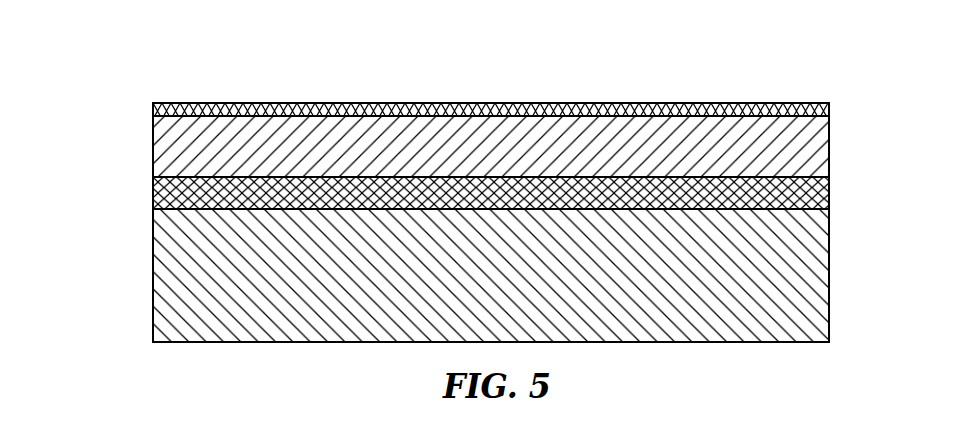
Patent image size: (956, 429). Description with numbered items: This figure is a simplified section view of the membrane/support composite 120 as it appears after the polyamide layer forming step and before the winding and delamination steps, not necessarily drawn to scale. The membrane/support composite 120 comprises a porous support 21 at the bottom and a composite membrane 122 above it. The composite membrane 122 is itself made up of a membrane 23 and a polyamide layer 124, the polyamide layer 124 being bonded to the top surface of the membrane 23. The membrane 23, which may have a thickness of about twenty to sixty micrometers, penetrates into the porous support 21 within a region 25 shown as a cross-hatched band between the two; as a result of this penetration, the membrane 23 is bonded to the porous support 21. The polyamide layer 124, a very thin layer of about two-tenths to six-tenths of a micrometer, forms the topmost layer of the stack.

The membrane/support composite 120 is at (332, 76).
The composite membrane 122 is at (98, 104).
The polyamide layer 124 is at (836, 103).
The membrane 23 is at (148, 117).
The region 25 is at (835, 177).
The porous support 21 is at (880, 177).